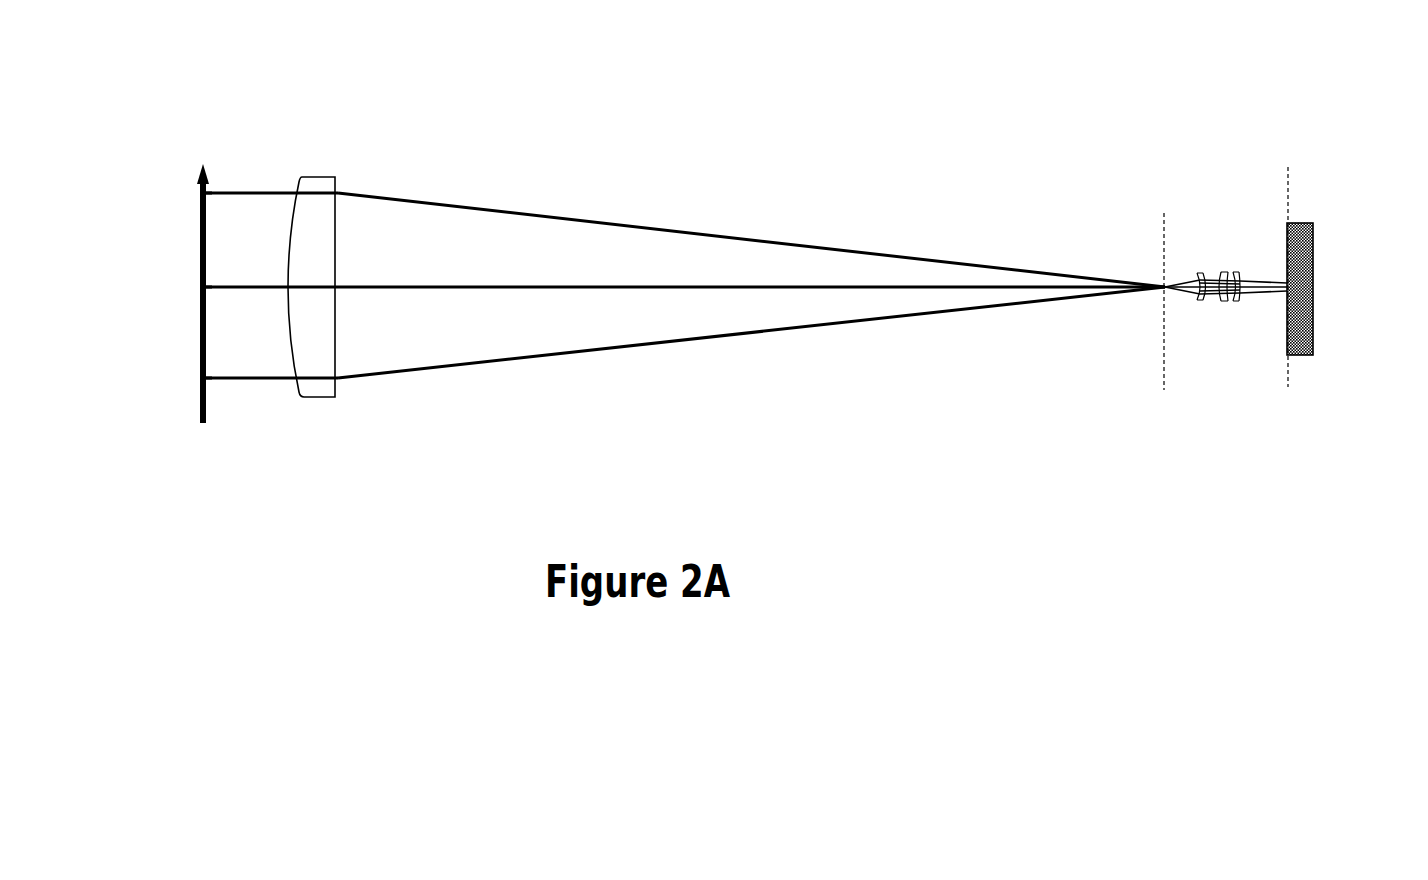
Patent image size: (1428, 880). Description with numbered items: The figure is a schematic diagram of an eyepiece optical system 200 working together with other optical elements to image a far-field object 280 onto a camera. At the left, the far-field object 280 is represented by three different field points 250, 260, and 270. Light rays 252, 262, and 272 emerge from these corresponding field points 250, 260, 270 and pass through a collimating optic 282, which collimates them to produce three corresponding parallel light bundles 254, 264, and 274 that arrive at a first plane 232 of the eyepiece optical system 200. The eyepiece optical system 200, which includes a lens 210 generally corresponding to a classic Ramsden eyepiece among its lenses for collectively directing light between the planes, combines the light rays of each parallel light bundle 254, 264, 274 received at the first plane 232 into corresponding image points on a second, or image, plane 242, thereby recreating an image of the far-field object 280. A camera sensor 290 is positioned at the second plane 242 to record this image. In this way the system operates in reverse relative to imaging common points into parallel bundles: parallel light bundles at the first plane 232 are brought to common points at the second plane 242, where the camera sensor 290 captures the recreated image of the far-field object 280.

The eyepiece optical system 200 is at (1218, 250).
The lens 210 is at (631, 488).
The first plane 232 is at (1170, 397).
The second plane 242 is at (1287, 390).
The field point 250 is at (203, 378).
The light ray 252 is at (265, 393).
The parallel light bundle 254 is at (1027, 305).
The field point 260 is at (203, 287).
The light ray 262 is at (248, 272).
The parallel light bundle 264 is at (895, 292).
The field point 270 is at (203, 193).
The light ray 272 is at (250, 183).
The parallel light bundle 274 is at (908, 250).
The far-field object 280 is at (197, 433).
The collimating optic 282 is at (328, 397).
The camera sensor 290 is at (1313, 235).